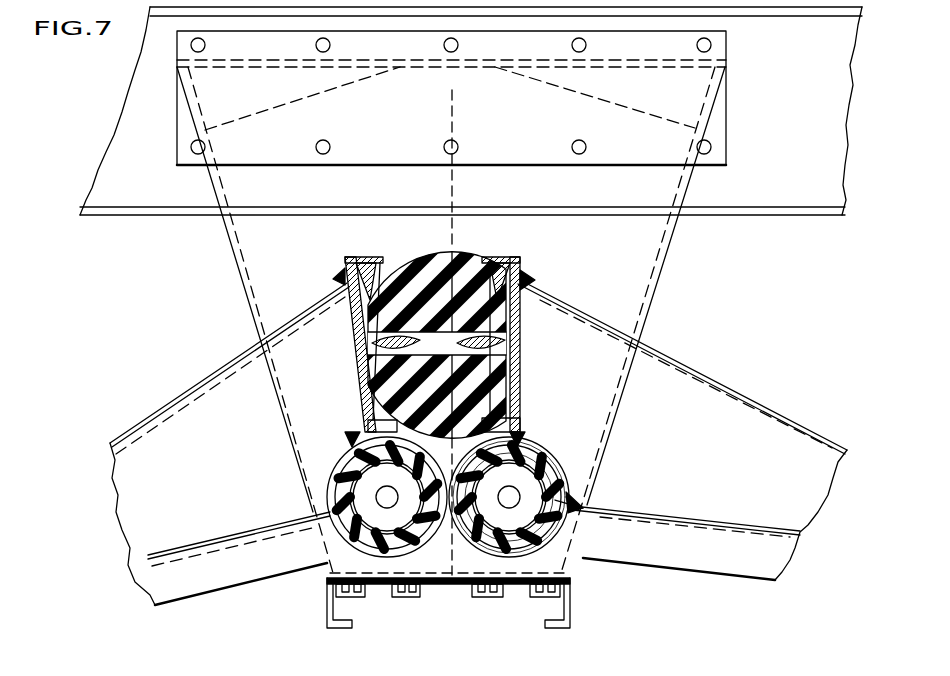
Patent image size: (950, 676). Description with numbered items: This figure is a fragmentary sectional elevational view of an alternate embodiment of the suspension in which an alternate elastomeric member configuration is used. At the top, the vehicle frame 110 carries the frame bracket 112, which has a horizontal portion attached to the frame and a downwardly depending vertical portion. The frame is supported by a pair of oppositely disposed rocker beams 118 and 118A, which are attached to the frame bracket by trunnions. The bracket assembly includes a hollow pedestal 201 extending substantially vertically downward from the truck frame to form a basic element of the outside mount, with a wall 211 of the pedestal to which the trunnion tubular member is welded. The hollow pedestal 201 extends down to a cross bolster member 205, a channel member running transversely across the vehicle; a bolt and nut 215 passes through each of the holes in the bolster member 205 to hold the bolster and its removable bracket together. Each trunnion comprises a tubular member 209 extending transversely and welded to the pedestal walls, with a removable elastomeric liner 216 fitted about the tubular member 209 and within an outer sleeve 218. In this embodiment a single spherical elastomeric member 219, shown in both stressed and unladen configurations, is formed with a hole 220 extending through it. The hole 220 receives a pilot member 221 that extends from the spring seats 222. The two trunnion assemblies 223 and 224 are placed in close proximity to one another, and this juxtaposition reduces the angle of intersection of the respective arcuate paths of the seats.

The vehicle frame 110 is at (822, 194).
The frame bracket 112 is at (690, 85).
The rocker beam 118 is at (238, 580).
The rocker beam 118A is at (700, 555).
The hollow pedestal 201 is at (656, 290).
The cross bolster member 205 is at (572, 622).
The tubular member 209 is at (577, 500).
The wall 211 is at (252, 288).
The bolt and nut 215 is at (482, 598).
The removable liner 216 is at (550, 487).
The outer sleeve 218 is at (543, 447).
The spherical elastomeric member 219 is at (412, 270).
The hole 220 is at (362, 392).
The pilot member 221 is at (358, 345).
The spring seat 222 is at (356, 292).
The trunnion assembly 223 is at (382, 556).
The trunnion assembly 224 is at (511, 558).